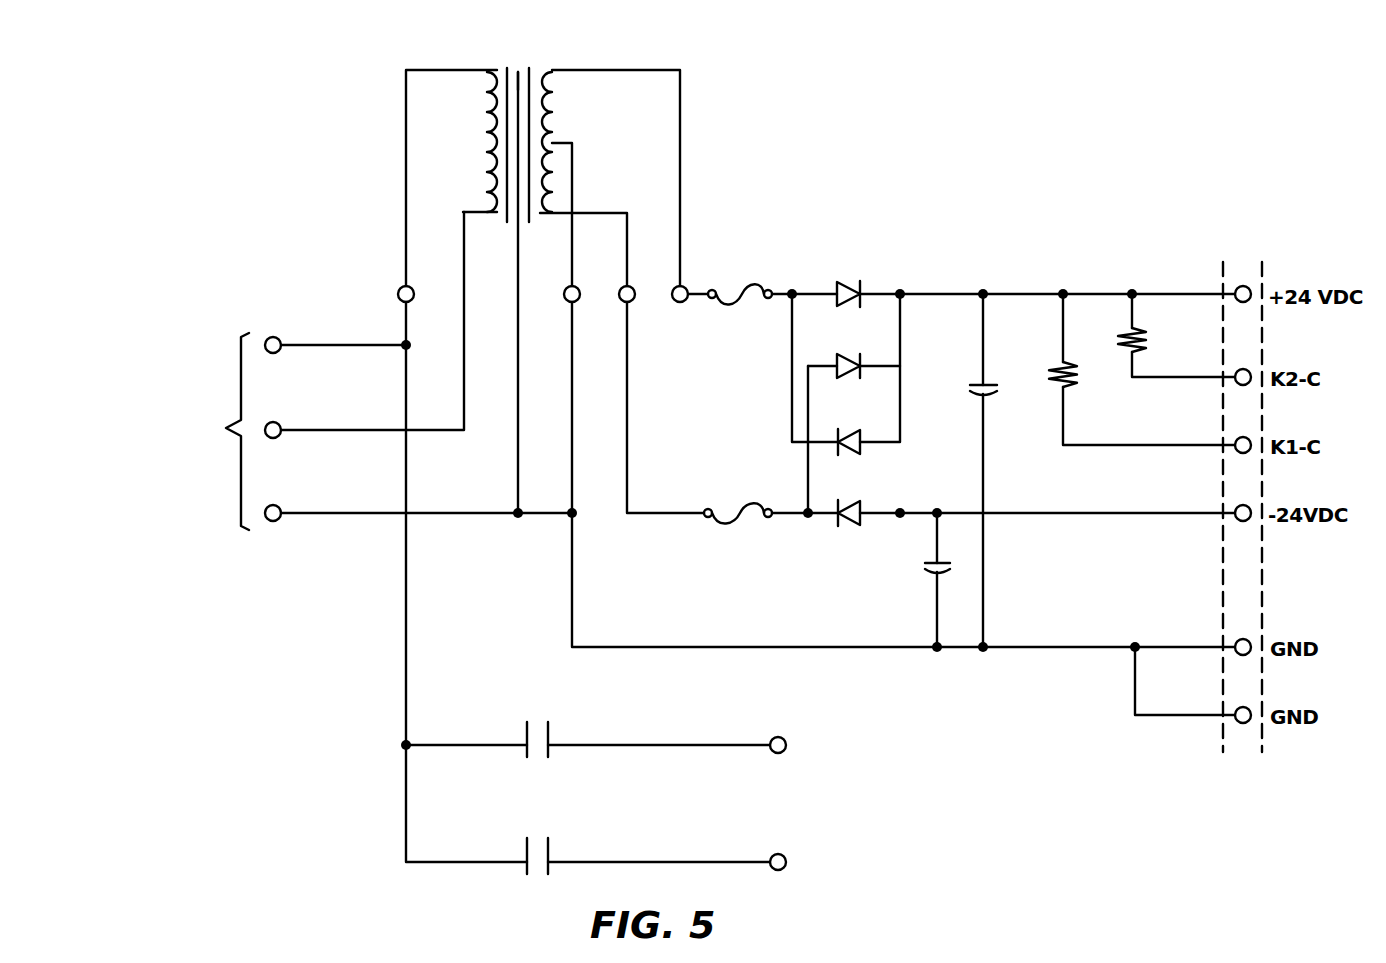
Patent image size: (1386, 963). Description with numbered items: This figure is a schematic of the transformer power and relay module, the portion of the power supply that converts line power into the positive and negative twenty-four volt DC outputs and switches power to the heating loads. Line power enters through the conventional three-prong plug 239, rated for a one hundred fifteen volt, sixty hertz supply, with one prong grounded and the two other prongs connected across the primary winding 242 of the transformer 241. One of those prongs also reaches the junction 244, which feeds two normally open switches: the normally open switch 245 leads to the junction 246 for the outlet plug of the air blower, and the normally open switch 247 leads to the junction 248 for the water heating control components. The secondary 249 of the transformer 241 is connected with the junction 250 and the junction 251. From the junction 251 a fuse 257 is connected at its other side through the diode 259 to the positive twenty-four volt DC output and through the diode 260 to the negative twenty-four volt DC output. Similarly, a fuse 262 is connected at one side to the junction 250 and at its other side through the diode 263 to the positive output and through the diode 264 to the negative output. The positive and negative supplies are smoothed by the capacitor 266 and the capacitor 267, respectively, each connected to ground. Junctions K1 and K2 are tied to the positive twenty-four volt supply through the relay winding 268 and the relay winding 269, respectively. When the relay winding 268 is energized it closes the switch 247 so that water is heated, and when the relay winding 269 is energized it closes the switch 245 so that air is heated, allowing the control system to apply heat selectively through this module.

The three prong plug 239 is at (168, 431).
The transformer 241 is at (518, 74).
The primary winding 242 is at (487, 128).
The secondary 249 is at (555, 120).
The junction 244 is at (397, 291).
The junction 250 is at (620, 288).
The junction 251 is at (675, 287).
The fuse 257 is at (742, 286).
The diode 259 is at (863, 292).
The diode 263 is at (864, 371).
The diode 260 is at (870, 436).
The fuse 262 is at (753, 520).
The diode 264 is at (853, 528).
The capacitor 266 is at (998, 388).
The capacitor 267 is at (925, 568).
The relay winding 268 is at (1078, 372).
The relay winding 269 is at (1138, 344).
The normally open switch 247 is at (525, 728).
The junction 248 is at (783, 738).
The normally open switch 245 is at (521, 846).
The junction 246 is at (783, 855).